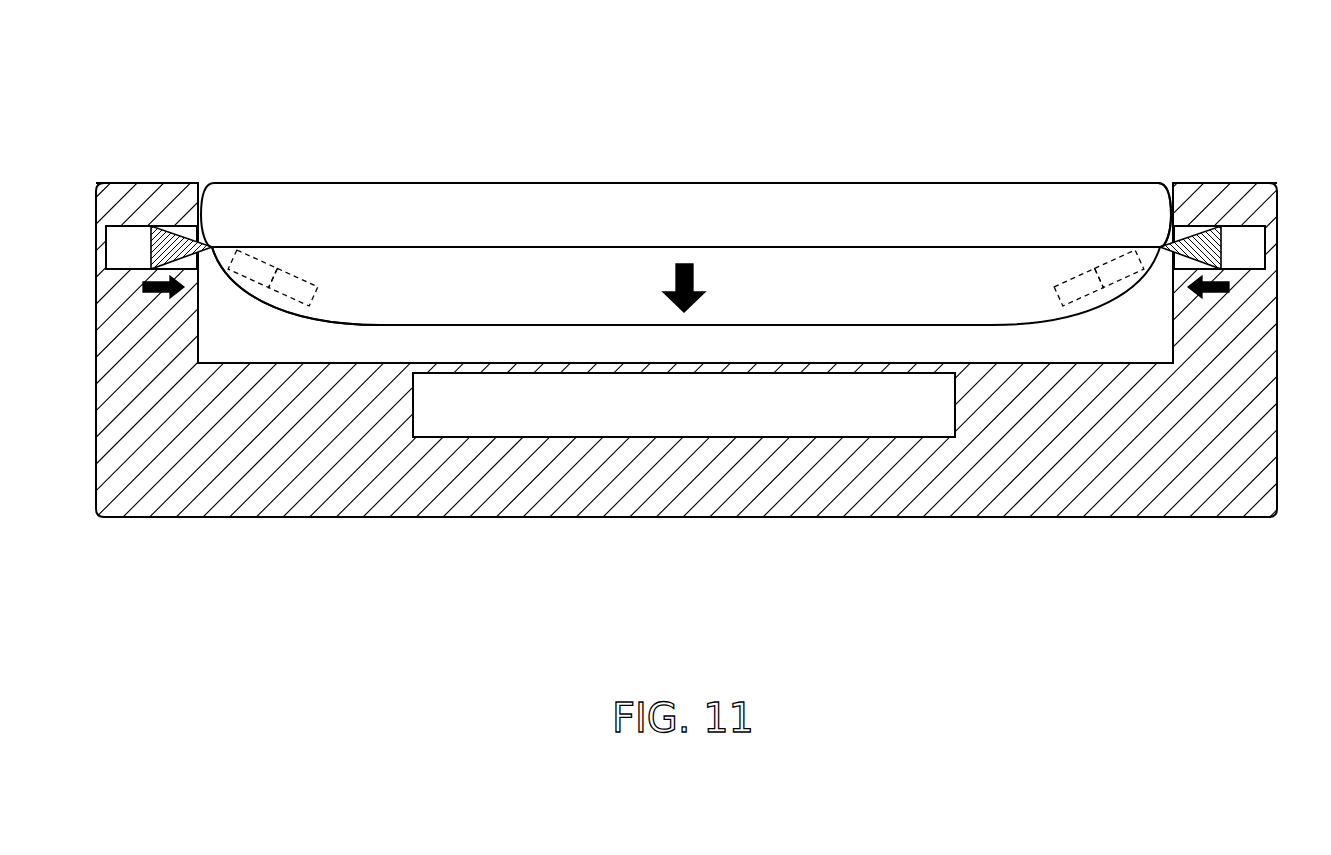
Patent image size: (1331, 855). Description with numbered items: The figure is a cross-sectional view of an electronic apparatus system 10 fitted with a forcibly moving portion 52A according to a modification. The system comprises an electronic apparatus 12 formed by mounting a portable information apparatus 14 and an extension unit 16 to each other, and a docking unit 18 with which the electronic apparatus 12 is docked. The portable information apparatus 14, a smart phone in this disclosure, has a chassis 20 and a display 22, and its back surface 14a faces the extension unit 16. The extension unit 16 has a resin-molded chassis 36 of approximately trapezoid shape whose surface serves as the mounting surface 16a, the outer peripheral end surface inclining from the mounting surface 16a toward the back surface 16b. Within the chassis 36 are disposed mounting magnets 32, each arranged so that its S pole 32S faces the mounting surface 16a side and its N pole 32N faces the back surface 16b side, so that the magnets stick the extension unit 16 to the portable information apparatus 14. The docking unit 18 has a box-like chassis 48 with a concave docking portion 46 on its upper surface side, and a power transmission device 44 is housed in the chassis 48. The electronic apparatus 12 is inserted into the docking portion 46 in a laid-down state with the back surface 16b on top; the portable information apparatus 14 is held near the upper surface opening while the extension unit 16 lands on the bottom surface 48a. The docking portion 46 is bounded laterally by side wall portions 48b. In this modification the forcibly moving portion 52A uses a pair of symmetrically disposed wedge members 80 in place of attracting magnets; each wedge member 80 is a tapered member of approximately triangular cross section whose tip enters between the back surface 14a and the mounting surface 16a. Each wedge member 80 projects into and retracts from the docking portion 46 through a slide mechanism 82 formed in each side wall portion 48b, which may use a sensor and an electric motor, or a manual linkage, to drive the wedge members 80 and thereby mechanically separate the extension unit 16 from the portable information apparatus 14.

The electronic apparatus system 10 is at (85, 27).
The electronic apparatus 12 is at (686, 311).
The portable information apparatus 14 is at (925, 181).
The back surface 14a is at (757, 252).
The extension unit 16 is at (958, 280).
The mounting surface 16a is at (540, 246).
The back surface 16b is at (830, 326).
The docking unit 18 is at (177, 181).
The chassis 20 is at (1018, 210).
The display 22 is at (633, 183).
The mounting magnet 32 is at (686, 165).
The S pole 32S is at (262, 250).
The N pole 32N is at (312, 252).
The chassis 36 is at (418, 282).
The power transmission device 44 is at (520, 418).
The docking portion 46 is at (365, 343).
The chassis 48 is at (620, 519).
The bottom surface 48a is at (712, 364).
The side wall portion 48b is at (138, 200).
The forcibly moving portion 52A is at (123, 259).
The wedge member 80 is at (165, 245).
The slide mechanism 82 is at (146, 233).